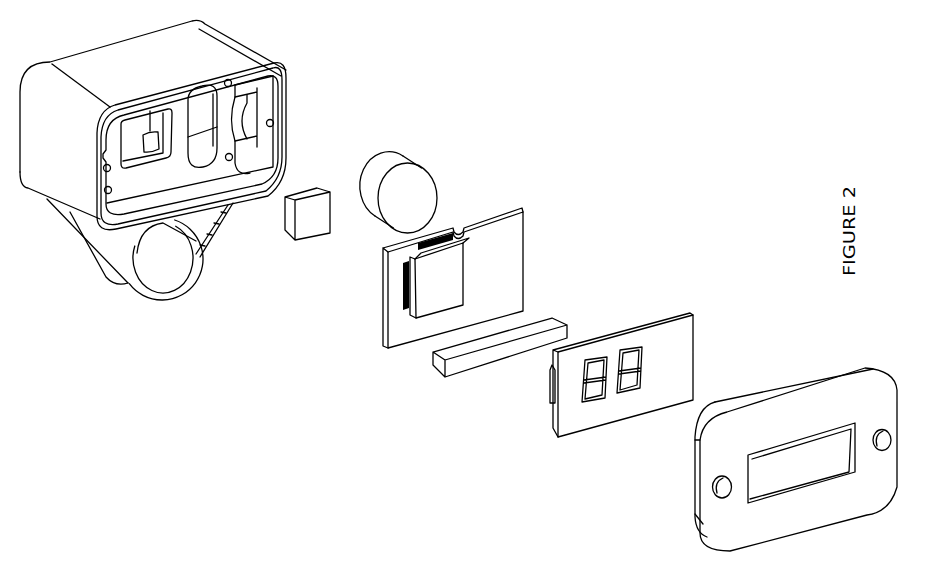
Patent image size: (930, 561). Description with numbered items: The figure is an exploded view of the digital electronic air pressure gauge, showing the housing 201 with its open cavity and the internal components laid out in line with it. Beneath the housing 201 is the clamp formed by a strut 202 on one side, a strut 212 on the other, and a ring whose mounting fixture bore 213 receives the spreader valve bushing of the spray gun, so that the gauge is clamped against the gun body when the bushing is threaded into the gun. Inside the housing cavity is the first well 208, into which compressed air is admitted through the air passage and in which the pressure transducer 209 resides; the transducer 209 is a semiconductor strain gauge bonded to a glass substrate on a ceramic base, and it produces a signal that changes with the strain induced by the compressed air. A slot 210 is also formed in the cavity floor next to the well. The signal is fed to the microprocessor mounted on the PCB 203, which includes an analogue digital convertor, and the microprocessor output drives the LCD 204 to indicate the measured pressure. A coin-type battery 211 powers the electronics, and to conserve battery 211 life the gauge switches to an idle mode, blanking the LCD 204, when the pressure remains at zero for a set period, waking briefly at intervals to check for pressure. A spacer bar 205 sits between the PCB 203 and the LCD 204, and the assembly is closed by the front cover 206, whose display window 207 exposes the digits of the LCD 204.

The housing 201 is at (47, 205).
The mounting clamp arm 202 is at (133, 200).
The PCB 203 is at (510, 207).
The LCD 204 is at (680, 312).
The spacer bar 205 is at (551, 317).
The front cover 206 is at (778, 393).
The display window 207 is at (808, 437).
The first well 208 is at (170, 88).
The pressure transducer 209 is at (302, 242).
The slot 210 is at (247, 90).
The battery 211 is at (413, 158).
The clamp arm 212 is at (148, 300).
The mounting fixture bore 213 is at (172, 297).